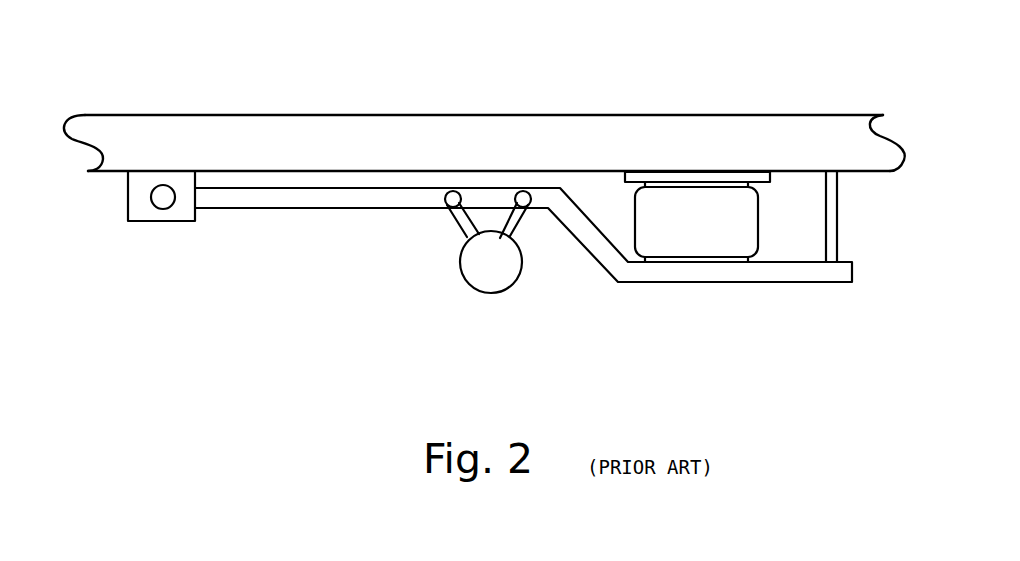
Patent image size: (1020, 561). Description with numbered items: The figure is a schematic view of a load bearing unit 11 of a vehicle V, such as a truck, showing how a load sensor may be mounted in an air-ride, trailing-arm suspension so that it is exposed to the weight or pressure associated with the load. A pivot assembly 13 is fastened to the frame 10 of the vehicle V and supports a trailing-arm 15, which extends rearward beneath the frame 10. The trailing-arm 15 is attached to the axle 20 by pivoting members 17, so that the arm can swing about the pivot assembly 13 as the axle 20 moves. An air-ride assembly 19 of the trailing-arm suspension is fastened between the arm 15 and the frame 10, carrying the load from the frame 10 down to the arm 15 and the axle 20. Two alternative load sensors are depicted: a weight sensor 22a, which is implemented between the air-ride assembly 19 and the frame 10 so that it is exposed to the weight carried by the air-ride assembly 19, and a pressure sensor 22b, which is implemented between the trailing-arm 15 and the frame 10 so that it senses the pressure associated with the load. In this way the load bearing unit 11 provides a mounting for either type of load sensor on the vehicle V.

The frame 10 is at (413, 125).
The vehicle V is at (686, 76).
The load bearing unit 11 is at (618, 371).
The pivot assembly 13 is at (162, 202).
The trailing-arm 15 is at (342, 198).
The pivoting members 17 is at (523, 199).
The air-ride assembly 19 is at (745, 227).
The axle 20 is at (482, 272).
The weight sensor 22a is at (772, 177).
The pressure sensor 22b is at (832, 231).